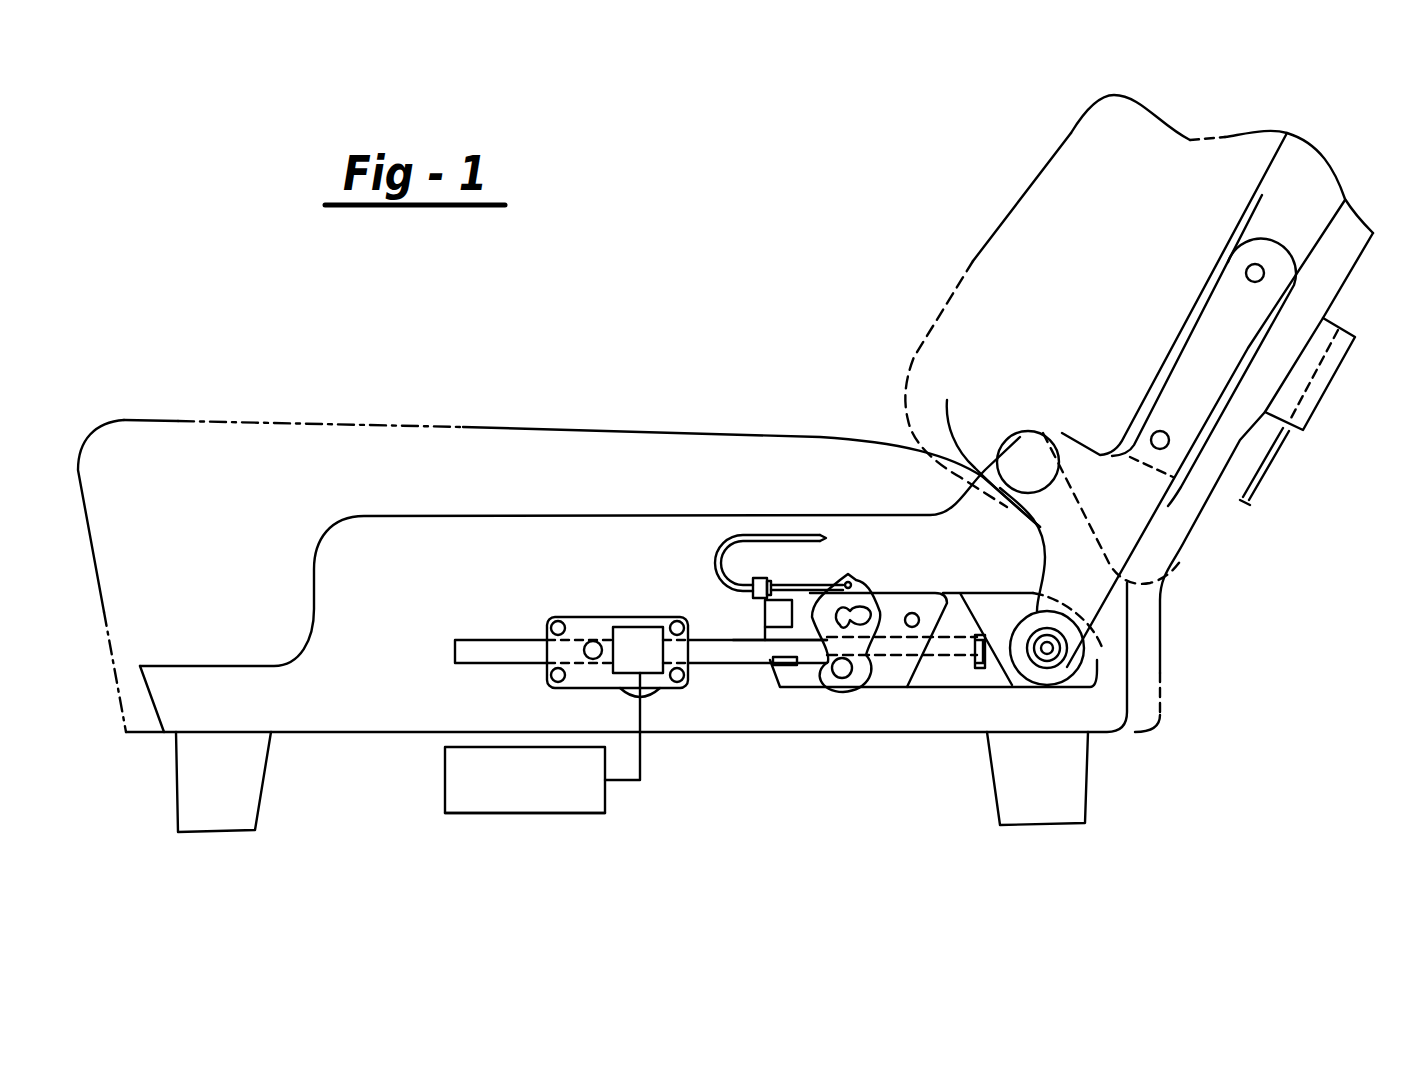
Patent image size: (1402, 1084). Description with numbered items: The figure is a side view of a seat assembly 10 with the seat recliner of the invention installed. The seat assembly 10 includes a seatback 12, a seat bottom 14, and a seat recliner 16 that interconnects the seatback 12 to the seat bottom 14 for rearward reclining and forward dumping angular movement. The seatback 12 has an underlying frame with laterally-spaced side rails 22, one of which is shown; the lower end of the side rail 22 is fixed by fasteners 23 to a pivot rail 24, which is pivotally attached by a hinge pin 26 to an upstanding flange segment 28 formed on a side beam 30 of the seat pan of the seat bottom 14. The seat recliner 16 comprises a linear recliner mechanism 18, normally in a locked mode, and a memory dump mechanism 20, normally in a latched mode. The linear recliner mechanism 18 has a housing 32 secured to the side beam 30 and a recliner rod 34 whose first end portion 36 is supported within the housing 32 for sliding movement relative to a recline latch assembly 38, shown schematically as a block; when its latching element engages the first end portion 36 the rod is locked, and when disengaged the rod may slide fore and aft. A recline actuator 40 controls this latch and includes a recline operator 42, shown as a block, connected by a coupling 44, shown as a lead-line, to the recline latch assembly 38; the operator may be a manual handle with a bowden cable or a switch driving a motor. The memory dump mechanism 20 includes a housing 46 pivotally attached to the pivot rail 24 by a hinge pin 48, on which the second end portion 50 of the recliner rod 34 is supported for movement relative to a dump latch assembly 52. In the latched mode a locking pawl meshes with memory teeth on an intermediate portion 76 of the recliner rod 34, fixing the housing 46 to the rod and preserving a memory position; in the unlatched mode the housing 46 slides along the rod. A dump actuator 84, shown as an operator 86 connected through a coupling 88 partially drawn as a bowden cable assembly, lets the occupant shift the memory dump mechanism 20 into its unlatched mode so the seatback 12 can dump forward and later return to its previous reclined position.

The seat assembly 10 is at (727, 386).
The seatback 12 is at (1075, 129).
The seat bottom 14 is at (487, 450).
The seat recliner 16 is at (807, 700).
The linear recliner mechanism 18 is at (583, 608).
The memory dump mechanism 20 is at (927, 684).
The side rail 22 is at (1263, 195).
The fasteners 23 is at (1247, 268).
The pivot rail 24 is at (1211, 326).
The hinge pin 26 is at (1028, 447).
The upstanding flange segment 28 is at (947, 400).
The side beam 30 is at (321, 719).
The housing 32 is at (587, 680).
The recliner rod 34 is at (707, 628).
The first end portion 36 is at (500, 647).
The recline latch assembly 38 is at (633, 627).
The recline actuator 40 is at (625, 796).
The recline operator 42 is at (600, 813).
The coupling 44 is at (642, 762).
The housing 46 is at (953, 607).
The hinge pin 48 is at (1047, 648).
The second end portion 50 is at (963, 660).
The dump latch assembly 52 is at (872, 596).
The intermediate portion 76 is at (740, 647).
The dump actuator 84 is at (1294, 452).
The operator 86 is at (1347, 327).
The coupling 88 is at (772, 538).